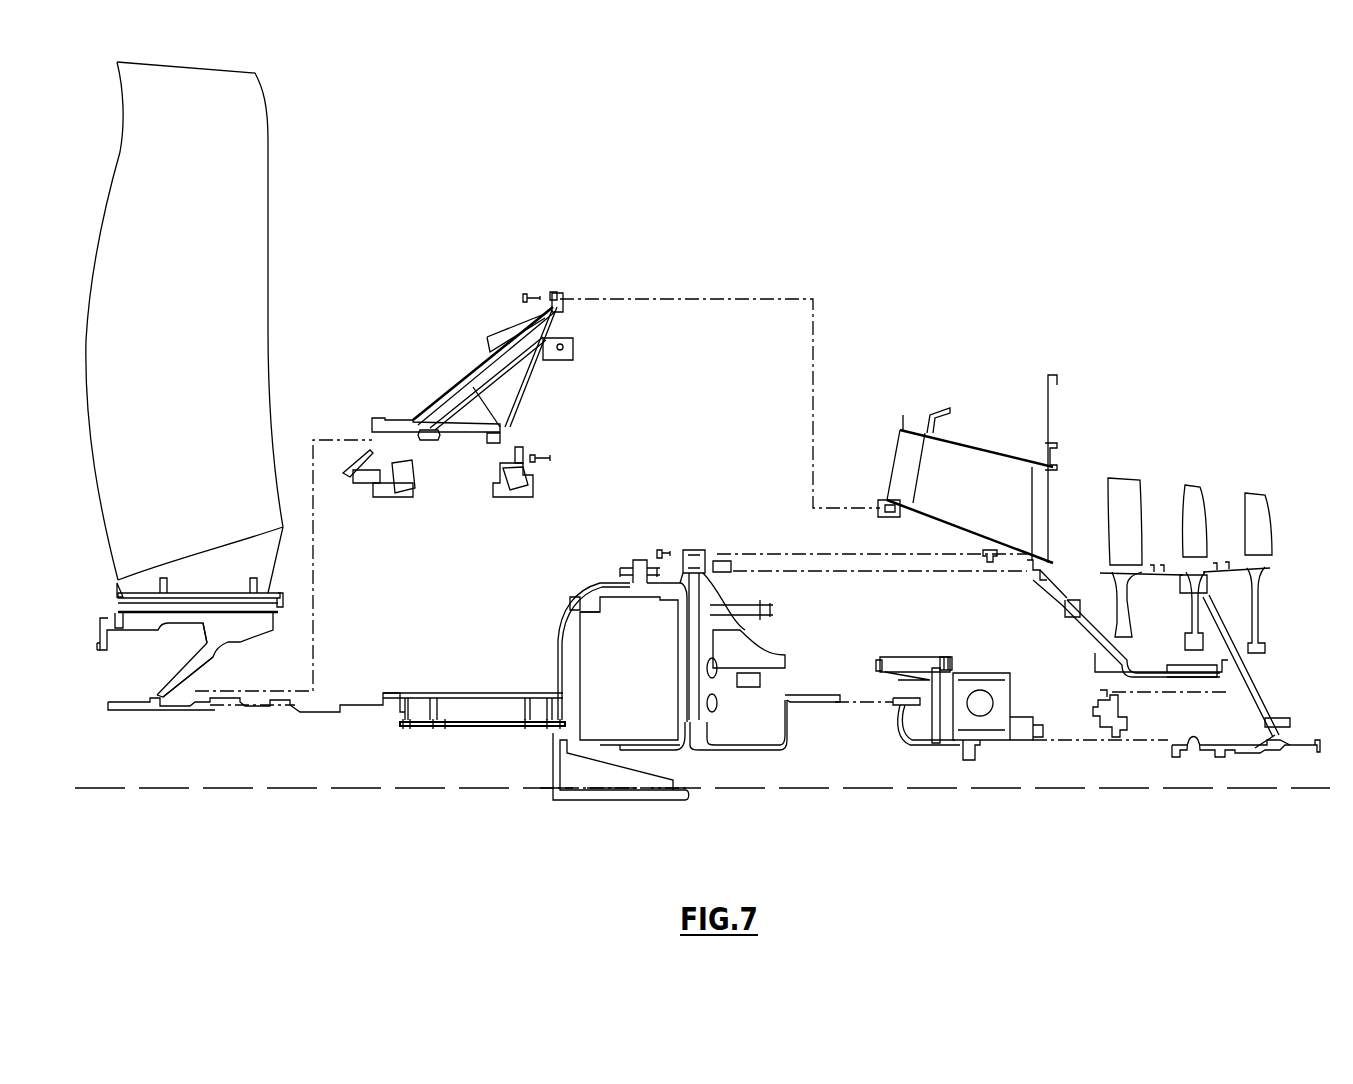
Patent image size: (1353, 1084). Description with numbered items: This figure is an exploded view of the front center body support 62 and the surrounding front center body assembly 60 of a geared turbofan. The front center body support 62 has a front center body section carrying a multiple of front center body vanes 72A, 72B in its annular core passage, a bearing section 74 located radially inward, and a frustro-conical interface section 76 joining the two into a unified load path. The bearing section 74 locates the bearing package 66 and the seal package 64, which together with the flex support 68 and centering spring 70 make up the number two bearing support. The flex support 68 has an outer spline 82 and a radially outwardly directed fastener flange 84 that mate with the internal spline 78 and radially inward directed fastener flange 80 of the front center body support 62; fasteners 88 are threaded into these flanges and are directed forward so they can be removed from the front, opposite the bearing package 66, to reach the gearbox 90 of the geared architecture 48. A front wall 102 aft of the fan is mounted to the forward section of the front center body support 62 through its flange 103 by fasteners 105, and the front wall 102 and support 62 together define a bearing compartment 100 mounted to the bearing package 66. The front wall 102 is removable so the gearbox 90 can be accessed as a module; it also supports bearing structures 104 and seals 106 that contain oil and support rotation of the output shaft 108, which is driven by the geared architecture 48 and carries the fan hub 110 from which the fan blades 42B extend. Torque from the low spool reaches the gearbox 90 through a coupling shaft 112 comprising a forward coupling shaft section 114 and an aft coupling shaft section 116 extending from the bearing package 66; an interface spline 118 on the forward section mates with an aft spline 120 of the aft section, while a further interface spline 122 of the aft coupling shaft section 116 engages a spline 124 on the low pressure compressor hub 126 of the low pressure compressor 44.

The fan blades 42B is at (197, 336).
The low pressure compressor 44 is at (1177, 468).
The geared architecture 48 is at (550, 627).
The front center body assembly 60 is at (883, 502).
The front center body support 62 is at (978, 430).
The seal package 64 is at (1112, 740).
The bearing package 66 is at (981, 752).
The flex support 68 is at (780, 640).
The centering spring 70 is at (898, 680).
The front center body vane 72A is at (908, 467).
The front center body vane 72B is at (1042, 493).
The bearing section 74 is at (1090, 610).
The frustro-conical interface section 76 is at (1095, 625).
The internal spline 78 is at (1035, 580).
The fastener flange 80 is at (987, 562).
The outer spline 82 is at (743, 540).
The fastener flange 84 is at (698, 540).
The fasteners 88 is at (670, 527).
The gearbox 90 is at (650, 676).
The bearing compartment 100 is at (785, 392).
The front wall 102 is at (463, 373).
The flange 103 is at (560, 293).
The bearing structures 104 is at (507, 497).
The fasteners 105 is at (532, 293).
The seals 106 is at (360, 497).
The output shaft 108 is at (362, 708).
The fan hub 110 is at (213, 657).
The coupling shaft 112 is at (744, 757).
The forward coupling shaft section 114 is at (783, 753).
The aft coupling shaft section 116 is at (940, 747).
The interface spline 118 is at (812, 702).
The aft spline 120 is at (903, 743).
The interface spline 122 is at (1000, 740).
The spline 124 is at (1197, 745).
The low pressure compressor hub 126 is at (1260, 750).